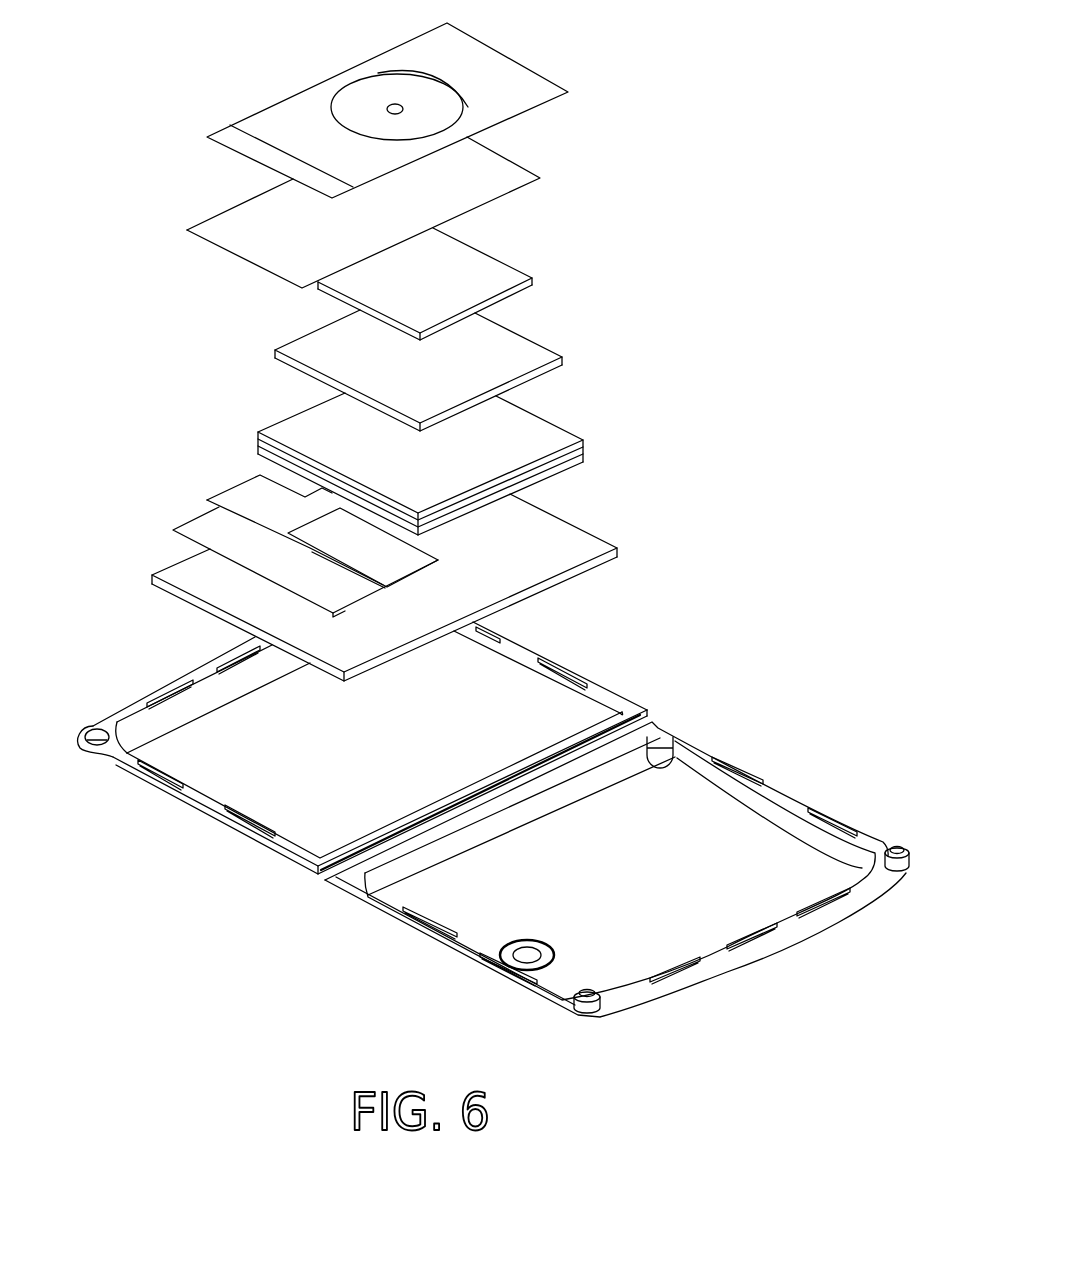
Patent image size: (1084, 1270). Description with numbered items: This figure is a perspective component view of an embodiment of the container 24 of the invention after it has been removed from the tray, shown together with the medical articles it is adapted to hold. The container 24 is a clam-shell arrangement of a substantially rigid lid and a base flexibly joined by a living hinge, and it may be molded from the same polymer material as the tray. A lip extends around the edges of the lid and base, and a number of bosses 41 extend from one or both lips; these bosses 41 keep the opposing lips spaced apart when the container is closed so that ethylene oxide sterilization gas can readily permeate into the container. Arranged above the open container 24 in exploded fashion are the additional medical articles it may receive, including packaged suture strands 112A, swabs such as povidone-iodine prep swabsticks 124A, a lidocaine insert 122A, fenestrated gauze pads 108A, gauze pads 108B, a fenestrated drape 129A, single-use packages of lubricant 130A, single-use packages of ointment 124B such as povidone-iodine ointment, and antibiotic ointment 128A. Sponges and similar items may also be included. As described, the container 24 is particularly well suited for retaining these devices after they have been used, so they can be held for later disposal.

The suture strands 112A is at (527, 90).
The swabs 124A is at (520, 175).
The lidocaine insert 122A is at (483, 268).
The fenestrated gauze pads 108A is at (520, 354).
The gauze pads 108B is at (525, 434).
The single-use packages of ointment 124B is at (243, 495).
The single-use packages of lubricant 130A is at (207, 532).
The antibiotic ointment 128A is at (405, 558).
The fenestrated drape 129A is at (585, 537).
The bosses 41 is at (573, 672).
The container 24 is at (752, 957).